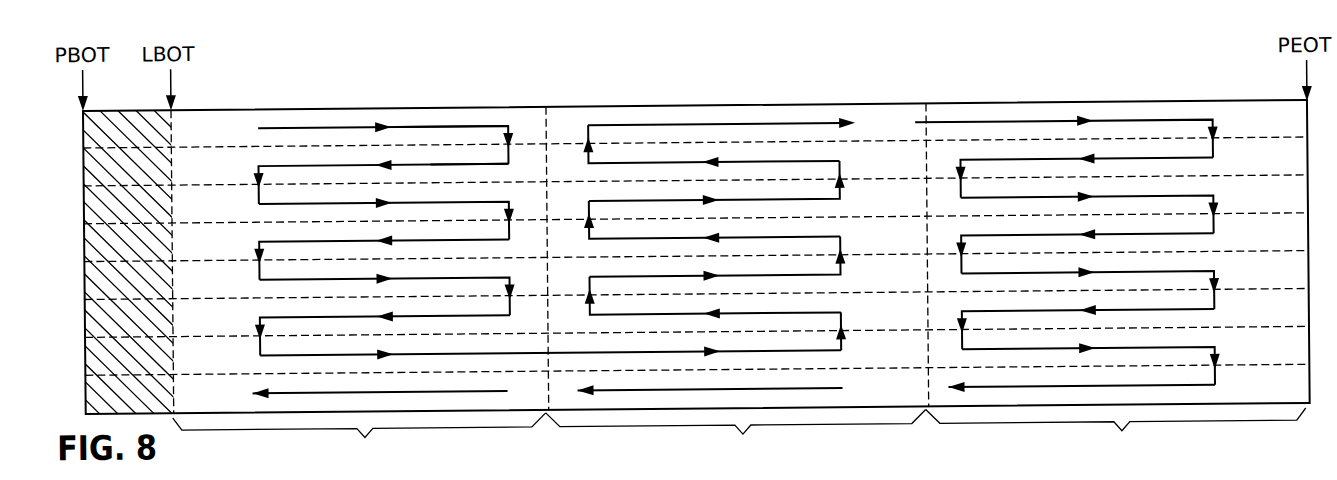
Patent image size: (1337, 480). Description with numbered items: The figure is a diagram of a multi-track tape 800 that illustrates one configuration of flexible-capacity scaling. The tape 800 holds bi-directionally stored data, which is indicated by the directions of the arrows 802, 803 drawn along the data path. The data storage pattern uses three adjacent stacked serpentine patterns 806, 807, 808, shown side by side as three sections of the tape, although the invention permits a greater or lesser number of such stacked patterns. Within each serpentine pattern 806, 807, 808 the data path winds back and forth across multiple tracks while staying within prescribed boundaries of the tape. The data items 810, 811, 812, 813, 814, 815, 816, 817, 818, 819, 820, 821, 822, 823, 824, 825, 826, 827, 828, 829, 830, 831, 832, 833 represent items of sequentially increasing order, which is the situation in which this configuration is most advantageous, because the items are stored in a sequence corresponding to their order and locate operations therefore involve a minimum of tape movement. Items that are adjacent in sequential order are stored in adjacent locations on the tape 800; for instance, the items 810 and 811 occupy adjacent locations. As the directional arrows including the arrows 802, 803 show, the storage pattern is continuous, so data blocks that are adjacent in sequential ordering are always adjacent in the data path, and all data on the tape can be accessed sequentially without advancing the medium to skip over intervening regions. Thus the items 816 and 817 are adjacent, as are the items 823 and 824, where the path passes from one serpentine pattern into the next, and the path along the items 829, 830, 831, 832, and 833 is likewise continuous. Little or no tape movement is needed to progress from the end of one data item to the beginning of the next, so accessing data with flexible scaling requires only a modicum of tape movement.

The multi-track tape 800 is at (778, 82).
The arrow 802 is at (407, 130).
The arrow 803 is at (478, 168).
The stacked serpentine pattern 806 is at (359, 439).
The stacked serpentine pattern 807 is at (736, 436).
The stacked serpentine pattern 808 is at (1116, 433).
The data item 810 is at (231, 139).
The data item 811 is at (231, 177).
The data item 812 is at (231, 215).
The data item 813 is at (231, 253).
The data item 814 is at (230, 291).
The data item 815 is at (230, 329).
The data item 816 is at (230, 367).
The data item 817 is at (907, 367).
The data item 818 is at (907, 329).
The data item 819 is at (907, 291).
The data item 820 is at (907, 253).
The data item 821 is at (907, 215).
The data item 822 is at (907, 177).
The data item 823 is at (907, 139).
The data item 824 is at (1283, 139).
The data item 825 is at (1283, 177).
The data item 826 is at (1283, 215).
The data item 827 is at (1282, 253).
The data item 828 is at (1282, 291).
The data item 829 is at (1281, 329).
The data item 830 is at (1281, 367).
The data item 831 is at (1280, 404).
The data item 832 is at (905, 404).
The data item 833 is at (229, 404).